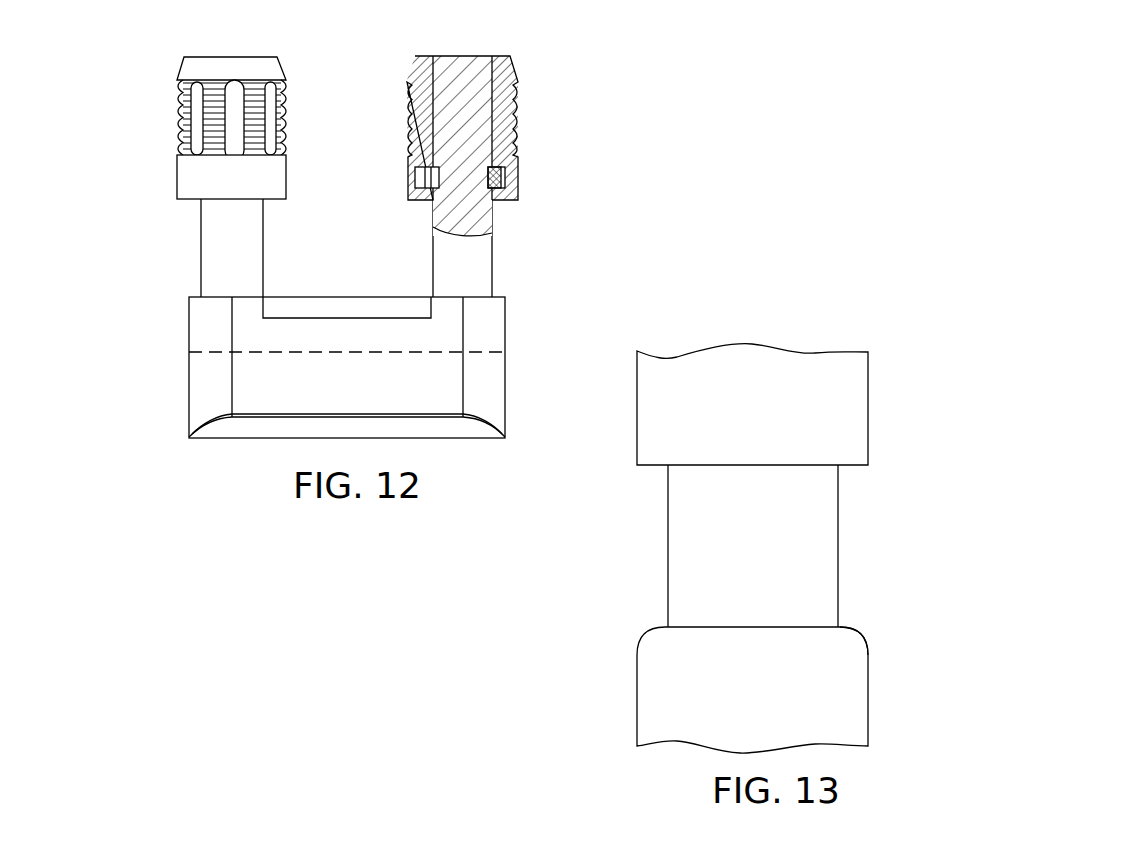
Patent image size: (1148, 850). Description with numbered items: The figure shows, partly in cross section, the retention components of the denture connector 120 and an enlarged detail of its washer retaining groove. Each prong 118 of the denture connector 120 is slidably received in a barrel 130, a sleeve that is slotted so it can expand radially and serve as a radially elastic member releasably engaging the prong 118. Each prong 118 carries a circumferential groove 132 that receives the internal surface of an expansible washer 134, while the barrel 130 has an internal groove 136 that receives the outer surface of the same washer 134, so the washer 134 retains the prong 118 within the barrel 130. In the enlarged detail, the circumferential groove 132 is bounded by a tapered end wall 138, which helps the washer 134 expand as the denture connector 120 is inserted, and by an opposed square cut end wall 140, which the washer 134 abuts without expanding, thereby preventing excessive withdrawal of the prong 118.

In FIG. 12, the prong 118 is at (201, 240).
In FIG. 13, the prong 118 is at (617, 706).
In FIG. 12, the denture connector 120 is at (148, 357).
In FIG. 12, the barrel 130 is at (177, 120).
In FIG. 12, the circumferential groove 132 is at (412, 218).
In FIG. 13, the circumferential groove 132 is at (645, 541).
In FIG. 12, the expansible washer 134 is at (503, 180).
In FIG. 12, the internal groove 136 is at (396, 176).
In FIG. 13, the tapered end wall 138 is at (853, 640).
In FIG. 13, the square cut end wall 140 is at (852, 466).